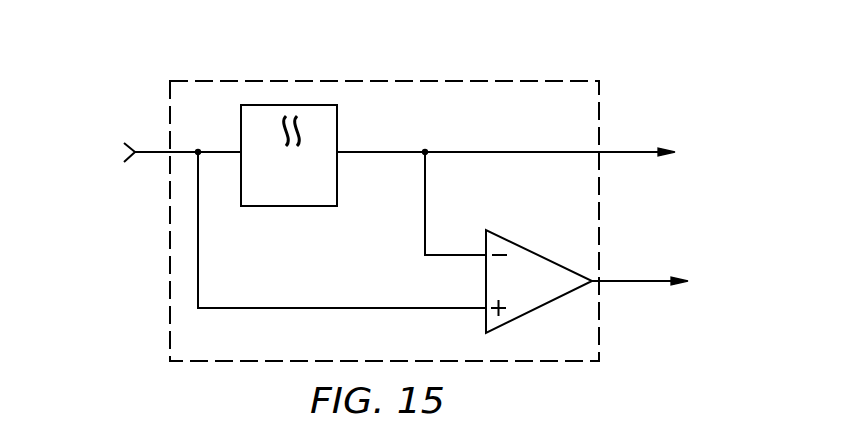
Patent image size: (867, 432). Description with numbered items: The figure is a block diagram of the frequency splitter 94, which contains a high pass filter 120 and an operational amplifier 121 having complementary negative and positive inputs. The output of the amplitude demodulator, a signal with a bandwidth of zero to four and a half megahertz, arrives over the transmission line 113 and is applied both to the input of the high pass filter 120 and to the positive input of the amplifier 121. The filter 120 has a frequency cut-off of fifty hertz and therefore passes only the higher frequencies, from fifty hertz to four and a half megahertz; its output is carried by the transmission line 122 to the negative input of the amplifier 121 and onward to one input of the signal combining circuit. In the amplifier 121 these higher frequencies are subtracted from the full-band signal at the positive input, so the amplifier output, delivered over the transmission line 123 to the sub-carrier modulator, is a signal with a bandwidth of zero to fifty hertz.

The frequency splitter 94 is at (468, 72).
The transmission line 113 is at (148, 154).
The high pass filter 120 is at (292, 206).
The operational amplifier 121 is at (527, 245).
The transmission line 122 is at (622, 153).
The transmission line 123 is at (617, 283).